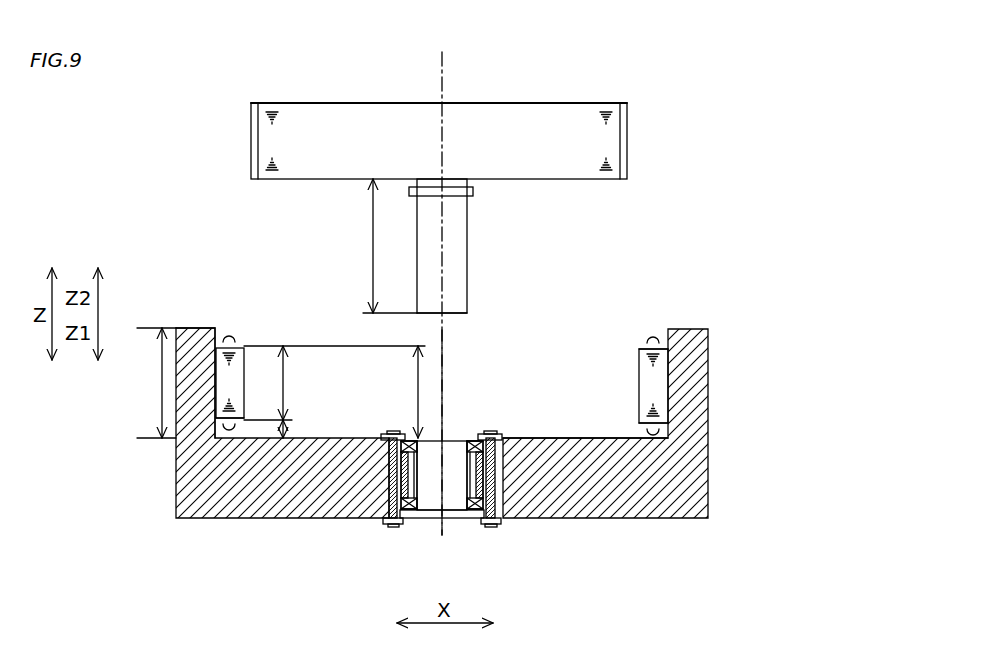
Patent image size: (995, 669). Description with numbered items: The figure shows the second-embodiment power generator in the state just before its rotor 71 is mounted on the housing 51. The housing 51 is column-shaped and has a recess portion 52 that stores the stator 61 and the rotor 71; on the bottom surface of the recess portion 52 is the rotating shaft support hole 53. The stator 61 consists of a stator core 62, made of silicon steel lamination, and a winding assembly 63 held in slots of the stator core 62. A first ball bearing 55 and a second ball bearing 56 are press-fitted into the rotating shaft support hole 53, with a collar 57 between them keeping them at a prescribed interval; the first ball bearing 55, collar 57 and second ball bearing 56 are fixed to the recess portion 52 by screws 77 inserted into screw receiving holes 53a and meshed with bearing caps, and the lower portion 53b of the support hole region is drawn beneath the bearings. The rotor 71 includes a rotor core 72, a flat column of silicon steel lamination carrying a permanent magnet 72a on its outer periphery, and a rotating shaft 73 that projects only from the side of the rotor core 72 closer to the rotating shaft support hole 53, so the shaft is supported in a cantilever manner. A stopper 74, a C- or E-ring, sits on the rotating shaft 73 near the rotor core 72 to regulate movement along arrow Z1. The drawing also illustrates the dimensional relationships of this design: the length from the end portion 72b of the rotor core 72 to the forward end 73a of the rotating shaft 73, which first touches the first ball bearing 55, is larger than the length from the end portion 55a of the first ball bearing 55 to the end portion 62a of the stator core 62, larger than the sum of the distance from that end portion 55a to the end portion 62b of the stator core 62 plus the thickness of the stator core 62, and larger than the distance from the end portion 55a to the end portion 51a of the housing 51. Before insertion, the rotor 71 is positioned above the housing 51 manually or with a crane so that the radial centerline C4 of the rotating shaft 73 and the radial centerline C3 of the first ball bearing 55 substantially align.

The housing 51 is at (693, 506).
The end portion of the housing 51a is at (195, 328).
The recess portion 52 is at (578, 438).
The rotating shaft support hole 53 is at (458, 445).
The screw receiving holes 53a is at (400, 438).
The lower end of bearing 53b is at (415, 518).
The first ball bearing 55 is at (488, 438).
The end portion of the first ball bearing 55a is at (476, 436).
The second ball bearing 56 is at (462, 512).
The collar 57 is at (441, 512).
The stator 61 is at (657, 371).
The stator core 62 is at (660, 392).
The end portion of the stator core 62a is at (244, 348).
The end portion of the stator core 62b is at (230, 430).
The winding assembly 63 is at (658, 425).
The rotor 71 is at (527, 124).
The rotor core 72 is at (578, 122).
The permanent magnet 72a is at (622, 112).
The end portion of the rotor core 72b is at (281, 180).
The rotating shaft 73 is at (458, 251).
The forward end of the rotating shaft 73a is at (455, 313).
The stopper 74 is at (473, 193).
The screws 77 is at (390, 500).
The radial centerline of the first ball bearing C3 is at (443, 358).
The radial centerline of the rotating shaft C4 is at (441, 58).